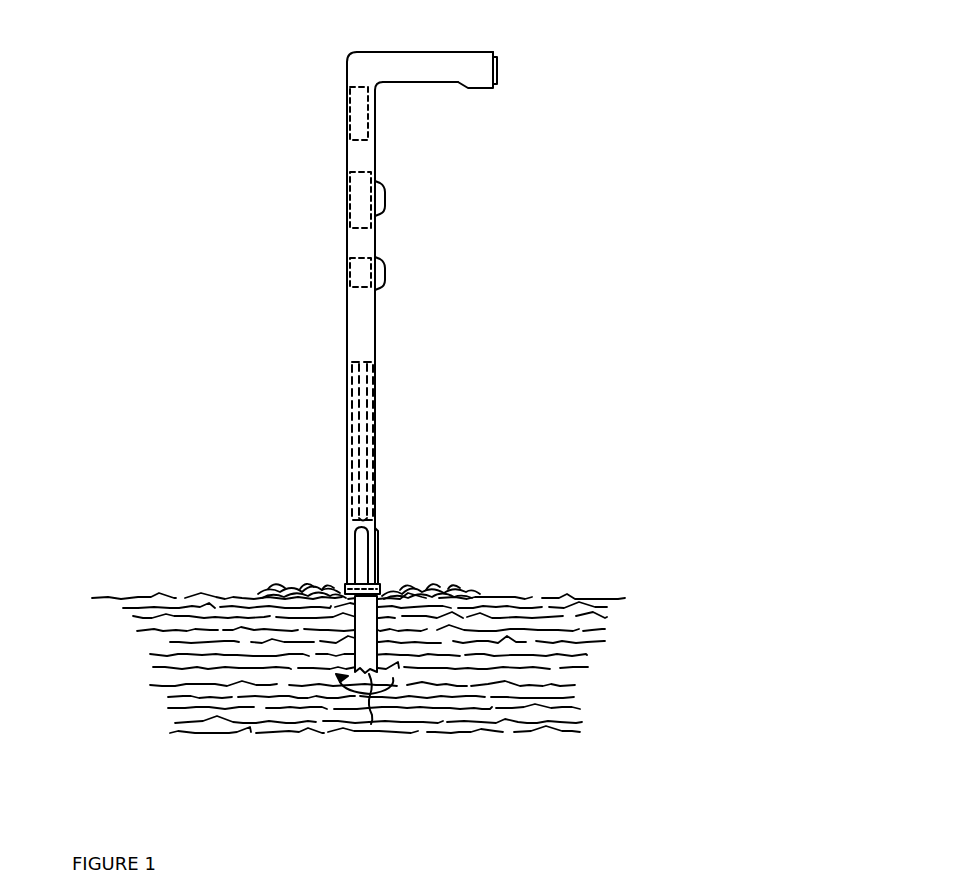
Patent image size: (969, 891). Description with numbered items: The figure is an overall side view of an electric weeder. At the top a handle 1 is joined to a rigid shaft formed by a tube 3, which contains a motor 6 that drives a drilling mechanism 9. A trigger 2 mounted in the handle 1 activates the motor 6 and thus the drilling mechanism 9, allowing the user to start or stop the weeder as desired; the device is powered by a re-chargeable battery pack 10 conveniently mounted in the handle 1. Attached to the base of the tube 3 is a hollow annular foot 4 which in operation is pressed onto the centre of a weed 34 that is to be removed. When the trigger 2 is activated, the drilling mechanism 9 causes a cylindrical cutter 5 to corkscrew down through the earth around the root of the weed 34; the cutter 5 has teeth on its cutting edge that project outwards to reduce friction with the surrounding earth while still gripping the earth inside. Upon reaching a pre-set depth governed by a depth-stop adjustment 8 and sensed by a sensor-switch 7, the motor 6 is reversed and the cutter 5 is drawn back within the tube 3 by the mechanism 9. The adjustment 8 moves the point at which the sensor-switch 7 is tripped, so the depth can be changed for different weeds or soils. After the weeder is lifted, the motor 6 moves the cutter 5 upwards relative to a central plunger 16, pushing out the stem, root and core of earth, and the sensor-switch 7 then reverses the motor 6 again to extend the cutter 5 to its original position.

The handle 1 is at (457, 368).
The trigger 2 is at (404, 86).
The tube 3 is at (376, 327).
The hollow annular foot 4 is at (383, 587).
The cylindrical cutter 5 is at (363, 635).
The motor 6 is at (358, 108).
The sensor-switch 7 is at (385, 195).
The depth-stop adjustment 8 is at (385, 268).
The drilling mechanism 9 is at (372, 463).
The re-chargeable battery pack 10 is at (432, 68).
The central plunger 16 is at (358, 420).
The weed 34 is at (283, 583).